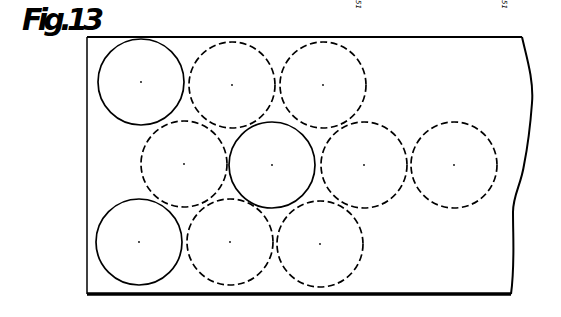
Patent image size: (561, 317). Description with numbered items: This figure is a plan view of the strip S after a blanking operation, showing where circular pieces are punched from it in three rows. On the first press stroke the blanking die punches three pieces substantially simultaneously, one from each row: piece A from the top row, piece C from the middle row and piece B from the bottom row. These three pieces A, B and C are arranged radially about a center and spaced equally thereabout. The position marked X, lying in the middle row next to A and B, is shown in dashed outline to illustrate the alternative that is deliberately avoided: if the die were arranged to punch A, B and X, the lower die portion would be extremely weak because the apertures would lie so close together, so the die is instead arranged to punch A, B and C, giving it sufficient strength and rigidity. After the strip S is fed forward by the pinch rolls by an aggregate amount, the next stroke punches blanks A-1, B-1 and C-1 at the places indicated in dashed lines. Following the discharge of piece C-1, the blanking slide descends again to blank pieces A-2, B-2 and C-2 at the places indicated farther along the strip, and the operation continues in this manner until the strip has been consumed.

The strip S is at (93, 182).
The piece A is at (141, 82).
The blank A-1 is at (232, 85).
The piece A-2 is at (323, 85).
The piece X is at (184, 164).
The piece C is at (272, 165).
The blank C-1 is at (364, 165).
The piece C-2 is at (454, 165).
The piece B is at (139, 242).
The blank B-1 is at (230, 242).
The piece B-2 is at (320, 244).